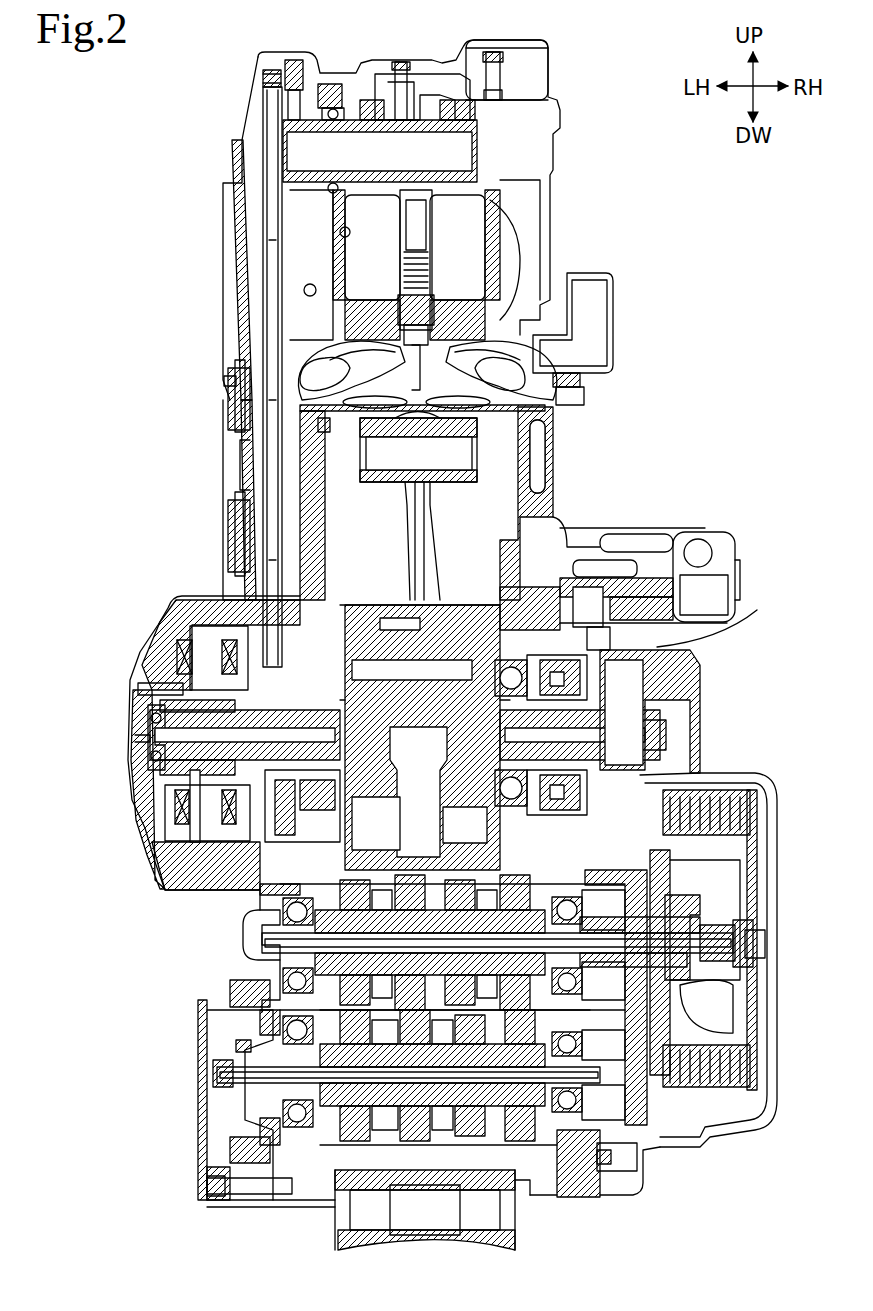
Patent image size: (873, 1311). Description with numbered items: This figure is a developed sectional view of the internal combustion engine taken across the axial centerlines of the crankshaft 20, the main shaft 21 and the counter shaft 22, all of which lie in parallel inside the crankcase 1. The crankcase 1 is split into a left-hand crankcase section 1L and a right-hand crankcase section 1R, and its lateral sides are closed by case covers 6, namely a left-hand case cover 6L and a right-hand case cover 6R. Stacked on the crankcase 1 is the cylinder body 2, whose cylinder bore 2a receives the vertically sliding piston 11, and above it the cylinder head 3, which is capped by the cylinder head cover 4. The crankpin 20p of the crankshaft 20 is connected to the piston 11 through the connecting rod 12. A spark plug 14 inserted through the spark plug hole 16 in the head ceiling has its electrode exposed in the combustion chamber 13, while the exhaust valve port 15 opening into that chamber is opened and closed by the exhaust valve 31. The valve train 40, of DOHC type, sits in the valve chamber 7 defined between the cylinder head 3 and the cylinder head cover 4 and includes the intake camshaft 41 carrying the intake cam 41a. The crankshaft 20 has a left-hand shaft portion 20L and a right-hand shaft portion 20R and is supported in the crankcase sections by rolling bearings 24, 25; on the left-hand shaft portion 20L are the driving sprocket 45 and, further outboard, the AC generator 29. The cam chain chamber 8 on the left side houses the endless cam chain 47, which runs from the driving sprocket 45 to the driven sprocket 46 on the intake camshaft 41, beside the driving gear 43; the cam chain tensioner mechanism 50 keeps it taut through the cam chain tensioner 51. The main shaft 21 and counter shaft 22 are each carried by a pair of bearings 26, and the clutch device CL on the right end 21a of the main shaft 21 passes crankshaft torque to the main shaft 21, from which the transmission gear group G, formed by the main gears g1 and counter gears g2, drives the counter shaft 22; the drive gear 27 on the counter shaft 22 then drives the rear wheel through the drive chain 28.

The crankcase 1 is at (458, 960).
The left-hand crankcase section 1L is at (280, 889).
The right-hand crankcase section 1R is at (595, 1033).
The cylinder body 2 is at (578, 482).
The cylinder bore 2a is at (480, 546).
The cylinder head 3 is at (500, 197).
The cylinder head cover 4 is at (550, 75).
The case covers 6 is at (438, 924).
The left-hand case cover 6L is at (150, 737).
The right-hand case cover 6R is at (708, 960).
The valve chamber 7 is at (522, 142).
The cam chain chamber 8 is at (316, 277).
The piston 11 is at (505, 430).
The connecting rod 12 is at (407, 520).
The combustion chamber 13 is at (410, 330).
The spark plug 14 is at (435, 285).
The exhaust valve port 15 is at (312, 425).
The spark plug hole 16 is at (440, 300).
The crankshaft 20 is at (431, 711).
The left-hand shaft portion 20L is at (245, 735).
The right-hand shaft portion 20R is at (583, 735).
The crankpin 20p is at (450, 618).
The main shaft 21 is at (300, 935).
The right end of the main shaft 21a is at (702, 905).
The counter shaft 22 is at (250, 1088).
The rolling bearing 24 is at (512, 682).
The rolling bearing 25 is at (305, 640).
The bearings 26 is at (292, 910).
The drive gear 27 is at (240, 1025).
The drive chain 28 is at (222, 1170).
The AC generator 29 is at (205, 655).
The exhaust valve 31 is at (300, 372).
The valve train 40 is at (355, 100).
The intake camshaft 41 is at (420, 110).
The intake cam 41a is at (365, 100).
The driving gear 43 is at (294, 62).
The driving sprocket 45 is at (345, 845).
The driven sprocket 46 is at (266, 80).
The cam chain 47 is at (263, 236).
The cam chain tensioner mechanism 50 is at (236, 478).
The cam chain tensioner 51 is at (228, 400).
The main gears g1 is at (394, 910).
The counter gears g2 is at (392, 1132).
The transmission gear group G is at (500, 1160).
The clutch device CL is at (765, 960).